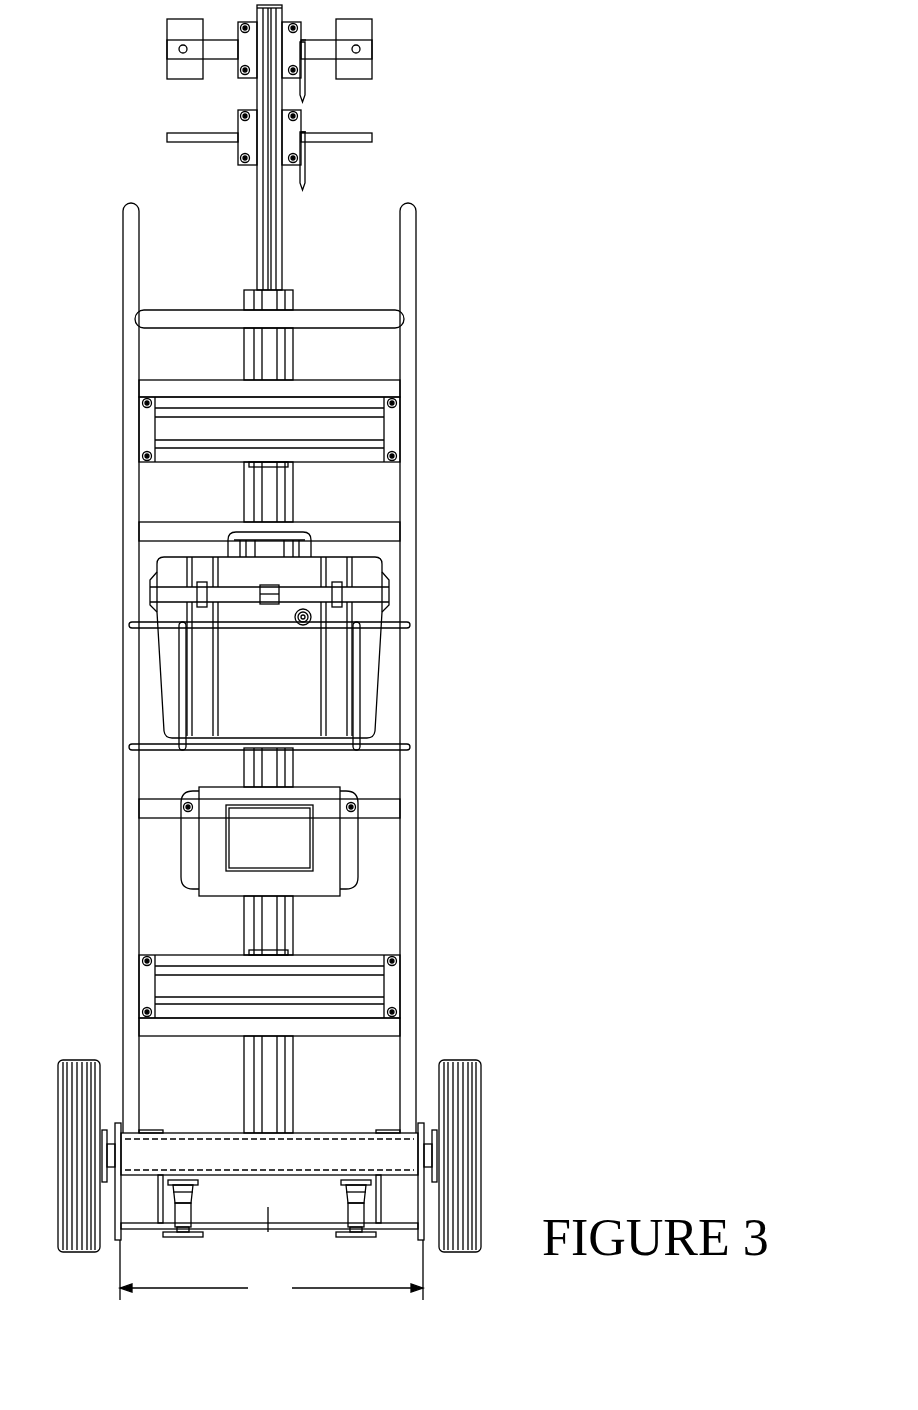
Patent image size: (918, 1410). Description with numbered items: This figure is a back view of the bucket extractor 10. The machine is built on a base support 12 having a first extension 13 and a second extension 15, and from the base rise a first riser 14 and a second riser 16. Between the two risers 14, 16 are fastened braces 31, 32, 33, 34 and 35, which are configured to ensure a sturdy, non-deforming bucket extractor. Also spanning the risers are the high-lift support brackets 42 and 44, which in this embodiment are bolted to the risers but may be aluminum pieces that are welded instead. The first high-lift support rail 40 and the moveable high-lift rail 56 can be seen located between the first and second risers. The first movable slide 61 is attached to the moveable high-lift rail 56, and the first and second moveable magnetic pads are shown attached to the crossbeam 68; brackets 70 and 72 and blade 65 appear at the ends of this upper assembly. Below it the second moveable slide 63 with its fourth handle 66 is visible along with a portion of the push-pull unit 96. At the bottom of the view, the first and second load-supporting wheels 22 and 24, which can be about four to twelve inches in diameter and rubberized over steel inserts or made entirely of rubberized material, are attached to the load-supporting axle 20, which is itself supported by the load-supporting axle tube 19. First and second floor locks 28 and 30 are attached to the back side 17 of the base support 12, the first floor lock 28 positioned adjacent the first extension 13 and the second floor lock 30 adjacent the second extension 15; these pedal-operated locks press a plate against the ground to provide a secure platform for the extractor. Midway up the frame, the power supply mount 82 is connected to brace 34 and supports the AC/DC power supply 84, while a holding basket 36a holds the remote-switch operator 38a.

The bucket extractor 10 is at (271, 653).
The base support 12 is at (271, 1271).
The first extension 13 is at (400, 1240).
The first riser 14 is at (408, 259).
The second extension 15 is at (137, 1240).
The second riser 16 is at (130, 258).
The back side 17 is at (270, 1232).
The load-supporting axle tube 19 is at (330, 1136).
The load-supporting axle 20 is at (207, 1138).
The first load-supporting wheel 22 is at (455, 1060).
The second load-supporting wheel 24 is at (83, 1060).
The first floor lock 28 is at (356, 1237).
The second floor lock 30 is at (183, 1237).
The brace 31 is at (385, 318).
The brace 32 is at (386, 388).
The brace 33 is at (386, 532).
The brace 34 is at (386, 806).
The brace 35 is at (386, 1027).
The holding basket 36a is at (132, 625).
The remote-switch operator 38a is at (358, 572).
The first high-lift support rail 40 is at (248, 1071).
The high-lift support bracket 42 is at (357, 428).
The high-lift support bracket 44 is at (357, 986).
The moveable high-lift rail 56 is at (260, 224).
The first movable slide 61 is at (254, 79).
The second moveable slide 63 is at (250, 164).
The upper blade 65 is at (306, 72).
The fourth handle 66 is at (306, 162).
The crossbeam 68 is at (228, 53).
The right bracket 70 is at (363, 72).
The left bracket 72 is at (173, 73).
The power supply mount 82 is at (350, 856).
The AC/DC power supply 84 is at (325, 838).
The push-pull unit 96 is at (195, 138).